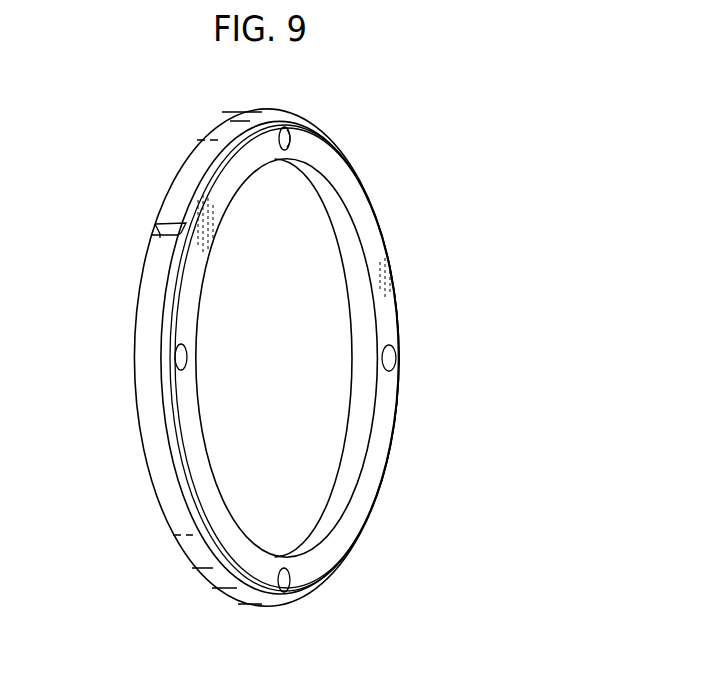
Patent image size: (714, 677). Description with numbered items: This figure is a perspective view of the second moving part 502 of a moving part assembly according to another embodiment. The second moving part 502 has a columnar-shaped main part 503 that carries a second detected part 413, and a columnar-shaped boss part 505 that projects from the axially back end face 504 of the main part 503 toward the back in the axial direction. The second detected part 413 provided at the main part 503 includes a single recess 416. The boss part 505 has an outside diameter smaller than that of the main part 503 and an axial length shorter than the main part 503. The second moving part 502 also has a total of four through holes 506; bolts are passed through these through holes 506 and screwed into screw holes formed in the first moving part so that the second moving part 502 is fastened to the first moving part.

The second moving part 502 is at (484, 155).
The second detected part 413 is at (166, 178).
The main part 503 is at (218, 127).
The axially back end face 504 is at (283, 119).
The boss part 505 is at (168, 332).
The through holes 506 is at (297, 141).
The recess 416 is at (157, 225).